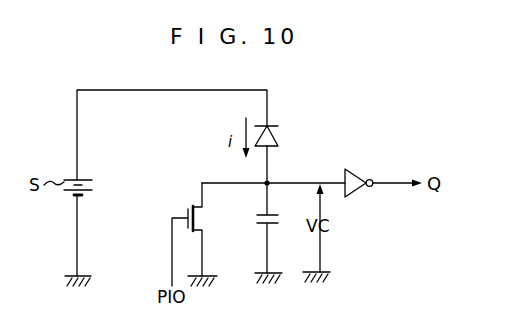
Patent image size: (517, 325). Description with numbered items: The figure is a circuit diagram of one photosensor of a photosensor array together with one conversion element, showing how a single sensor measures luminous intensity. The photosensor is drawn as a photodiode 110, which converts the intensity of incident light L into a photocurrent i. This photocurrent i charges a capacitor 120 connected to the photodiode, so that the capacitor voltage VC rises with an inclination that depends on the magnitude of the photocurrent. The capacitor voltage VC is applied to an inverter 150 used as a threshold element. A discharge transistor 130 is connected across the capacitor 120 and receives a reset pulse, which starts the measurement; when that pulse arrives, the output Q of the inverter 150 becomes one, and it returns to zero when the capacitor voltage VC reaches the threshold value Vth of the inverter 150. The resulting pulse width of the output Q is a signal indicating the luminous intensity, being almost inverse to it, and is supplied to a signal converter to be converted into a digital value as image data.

The photodiode 110 is at (279, 134).
The capacitor 120 is at (279, 219).
The discharge transistor 130 is at (198, 214).
The inverter 150 is at (371, 157).